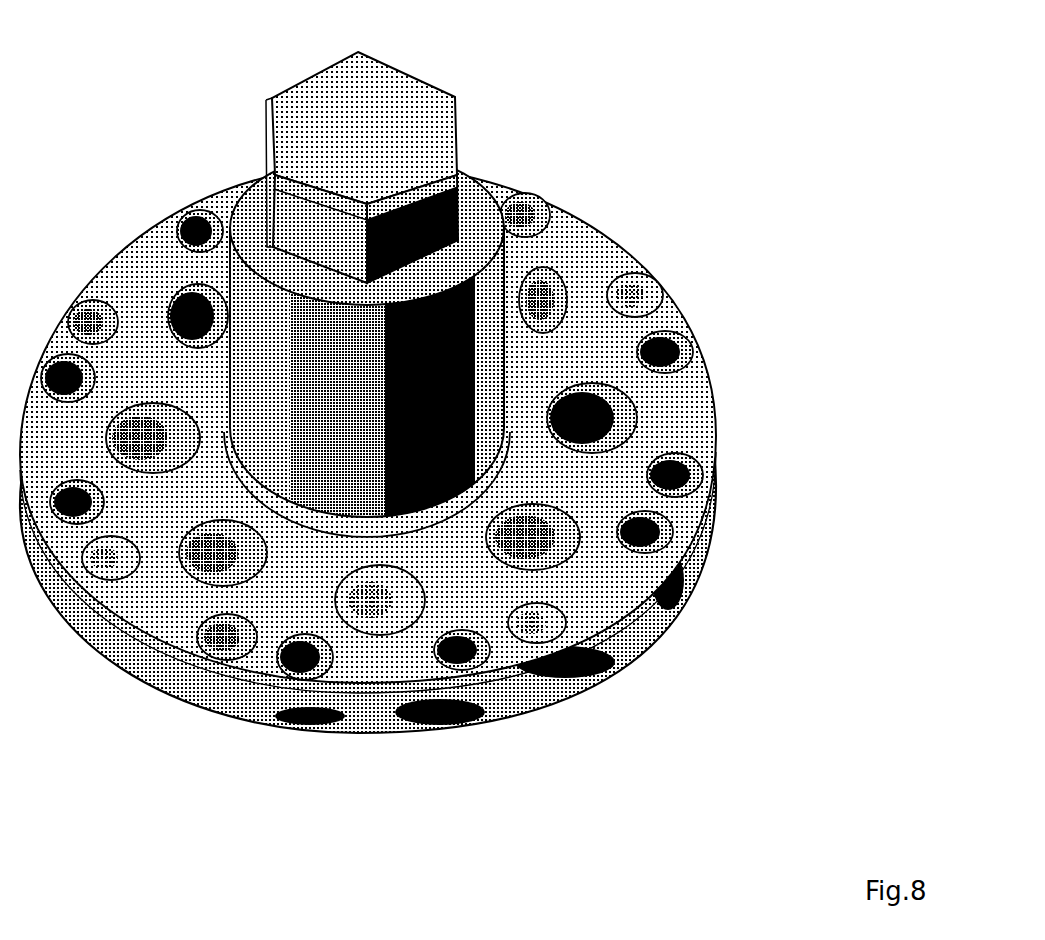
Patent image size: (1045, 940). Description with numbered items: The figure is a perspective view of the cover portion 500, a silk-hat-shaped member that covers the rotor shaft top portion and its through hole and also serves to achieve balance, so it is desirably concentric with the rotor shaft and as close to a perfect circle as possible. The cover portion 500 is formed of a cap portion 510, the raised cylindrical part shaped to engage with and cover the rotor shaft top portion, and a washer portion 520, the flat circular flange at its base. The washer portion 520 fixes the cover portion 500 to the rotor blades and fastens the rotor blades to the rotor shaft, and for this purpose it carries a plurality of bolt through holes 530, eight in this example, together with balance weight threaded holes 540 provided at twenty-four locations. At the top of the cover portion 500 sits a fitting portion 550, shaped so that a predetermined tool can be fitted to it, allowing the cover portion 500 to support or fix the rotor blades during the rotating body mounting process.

The cover portion 500 is at (215, 87).
The cap portion 510 is at (252, 331).
The washer portion 520 is at (710, 413).
The bolt through holes 530 is at (615, 410).
The balance weight threaded holes 540 is at (703, 543).
The fitting portion 550 is at (456, 207).